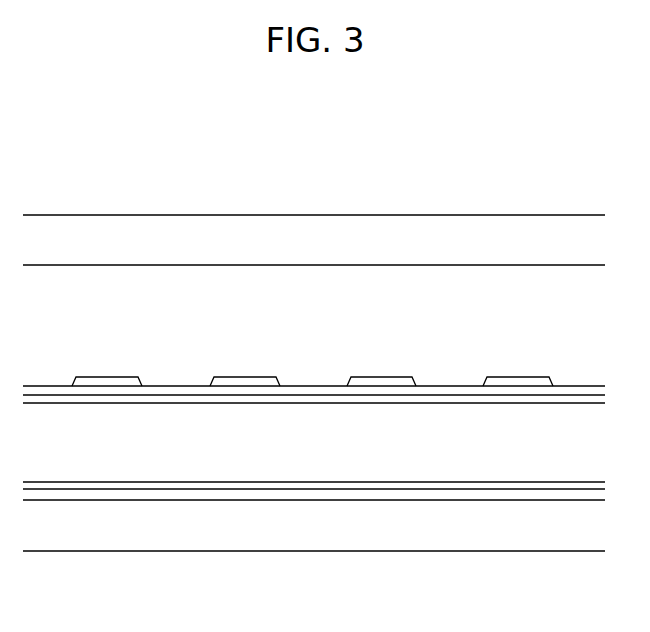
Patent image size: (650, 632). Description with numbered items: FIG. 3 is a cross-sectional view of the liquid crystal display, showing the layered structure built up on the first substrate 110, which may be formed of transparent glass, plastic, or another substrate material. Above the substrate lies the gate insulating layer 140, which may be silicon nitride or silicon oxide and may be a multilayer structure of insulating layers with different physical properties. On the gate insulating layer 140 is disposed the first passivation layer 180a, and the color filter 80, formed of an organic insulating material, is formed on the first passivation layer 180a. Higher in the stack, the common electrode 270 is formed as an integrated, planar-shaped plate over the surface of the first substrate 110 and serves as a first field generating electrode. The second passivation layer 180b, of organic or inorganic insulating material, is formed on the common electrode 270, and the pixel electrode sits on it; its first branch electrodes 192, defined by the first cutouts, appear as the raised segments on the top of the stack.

The common electrode 270 is at (50, 402).
The second passivation layer 180b is at (171, 390).
The first branch electrodes 192 is at (106, 382).
The color filter 80 is at (179, 446).
The first passivation layer 180a is at (273, 485).
The gate insulating layer 140 is at (376, 494).
The first substrate 110 is at (466, 527).